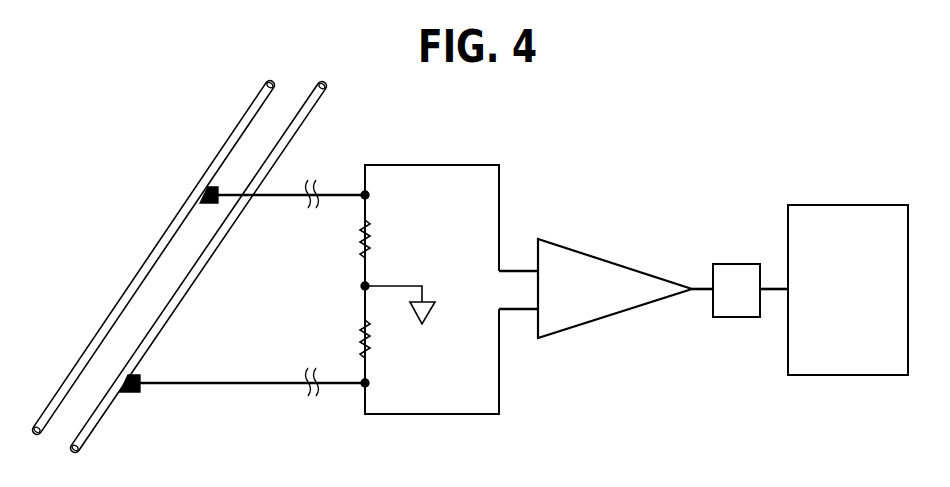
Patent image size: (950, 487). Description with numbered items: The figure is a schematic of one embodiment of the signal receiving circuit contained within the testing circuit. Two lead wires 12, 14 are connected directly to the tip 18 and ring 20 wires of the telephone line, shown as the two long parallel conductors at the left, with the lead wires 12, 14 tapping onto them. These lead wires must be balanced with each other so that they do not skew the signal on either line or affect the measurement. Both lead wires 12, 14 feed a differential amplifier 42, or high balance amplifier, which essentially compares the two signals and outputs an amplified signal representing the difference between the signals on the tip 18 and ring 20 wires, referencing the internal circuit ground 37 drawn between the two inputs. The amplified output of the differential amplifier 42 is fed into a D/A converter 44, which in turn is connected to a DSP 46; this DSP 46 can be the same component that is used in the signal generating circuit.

The tip wire 18 is at (210, 163).
The ring wire 20 is at (268, 173).
The lead wire 12 is at (273, 202).
The lead wire 14 is at (183, 385).
The internal circuit ground 37 is at (393, 286).
The differential amplifier 42 is at (617, 318).
The D/A converter 44 is at (743, 318).
The DSP 46 is at (818, 376).